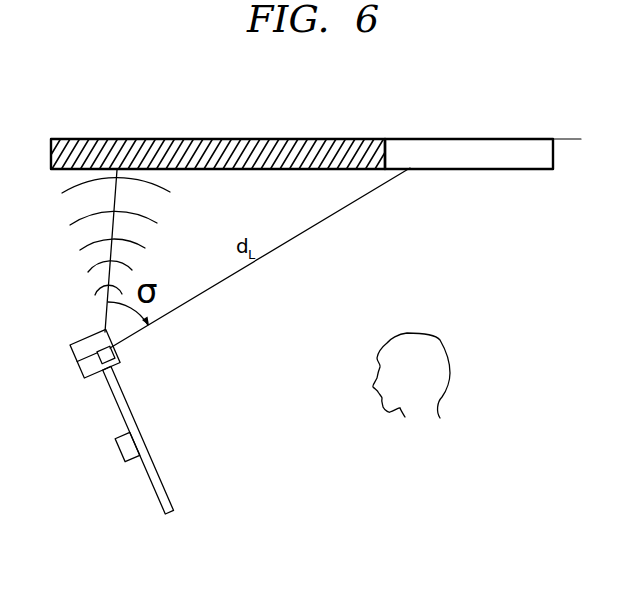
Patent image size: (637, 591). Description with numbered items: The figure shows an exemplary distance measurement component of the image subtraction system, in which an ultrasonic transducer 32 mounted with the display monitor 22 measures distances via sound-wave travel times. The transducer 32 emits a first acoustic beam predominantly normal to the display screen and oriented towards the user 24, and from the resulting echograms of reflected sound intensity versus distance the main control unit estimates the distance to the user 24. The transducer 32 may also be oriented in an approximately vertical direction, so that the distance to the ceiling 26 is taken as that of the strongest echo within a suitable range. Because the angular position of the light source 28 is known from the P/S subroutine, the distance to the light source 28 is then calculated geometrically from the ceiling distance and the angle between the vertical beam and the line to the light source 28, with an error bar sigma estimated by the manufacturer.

The display monitor 22 is at (167, 490).
The user 24 is at (443, 345).
The ceiling 26 is at (213, 138).
The light source 28 is at (513, 169).
The ultrasonic transducer 32 is at (79, 367).